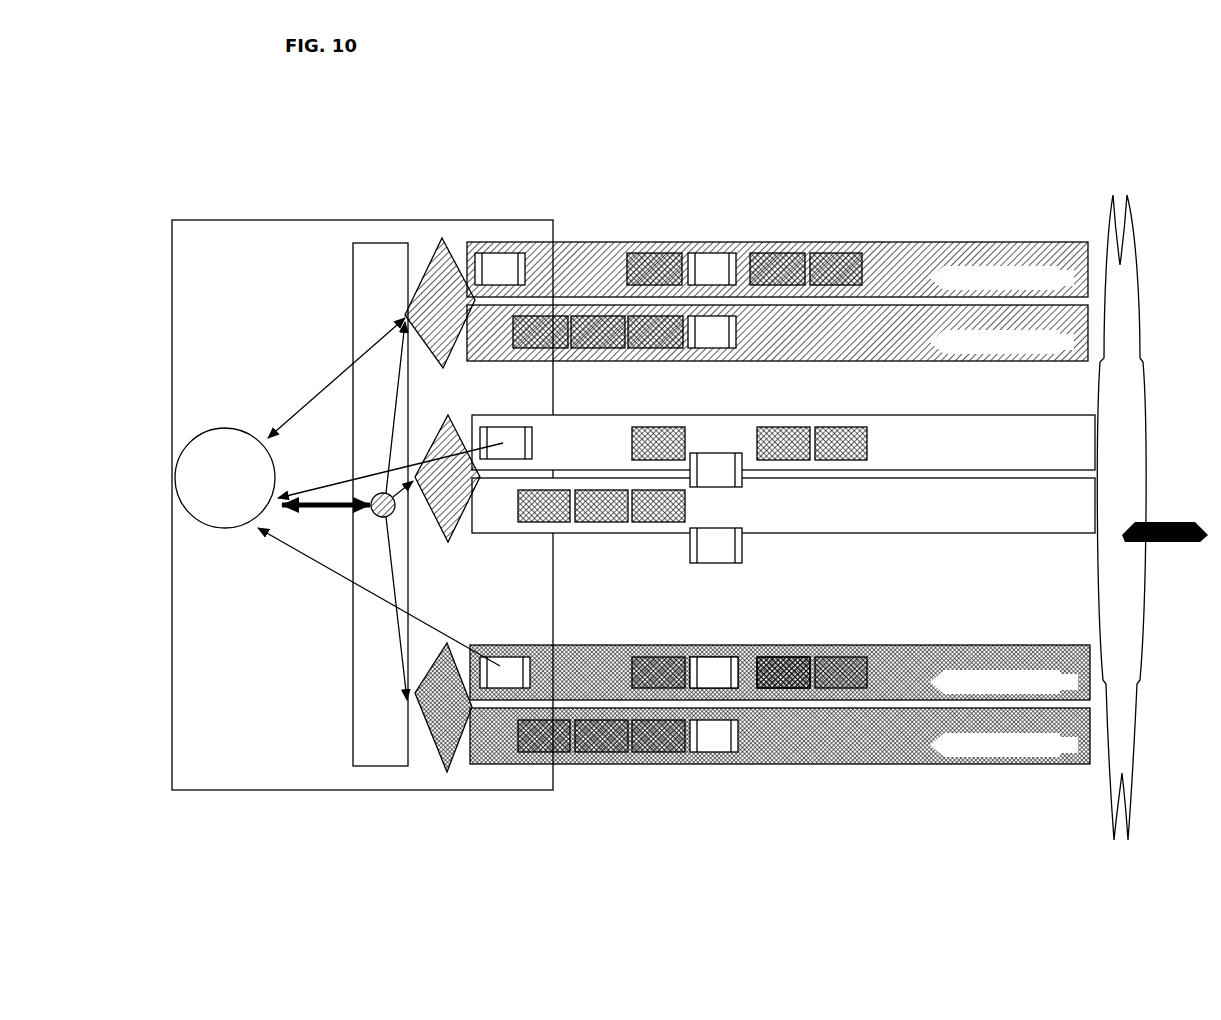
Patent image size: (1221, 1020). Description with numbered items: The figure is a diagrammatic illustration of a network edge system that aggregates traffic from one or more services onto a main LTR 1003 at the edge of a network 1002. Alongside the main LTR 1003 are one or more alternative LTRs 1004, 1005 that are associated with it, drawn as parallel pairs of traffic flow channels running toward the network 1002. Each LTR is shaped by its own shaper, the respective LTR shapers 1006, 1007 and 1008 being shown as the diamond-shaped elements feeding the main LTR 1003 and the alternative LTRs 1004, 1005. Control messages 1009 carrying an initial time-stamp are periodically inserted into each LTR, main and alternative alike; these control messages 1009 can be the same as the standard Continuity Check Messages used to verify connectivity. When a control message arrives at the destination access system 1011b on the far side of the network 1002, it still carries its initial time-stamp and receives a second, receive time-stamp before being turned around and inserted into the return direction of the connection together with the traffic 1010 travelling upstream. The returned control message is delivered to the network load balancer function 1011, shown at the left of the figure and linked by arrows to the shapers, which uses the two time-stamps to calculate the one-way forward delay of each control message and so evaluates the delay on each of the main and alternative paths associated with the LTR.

The network 1002 is at (1115, 845).
The main LTR 1003 is at (605, 645).
The alternative LTR 1004 is at (592, 415).
The alternative LTR 1005 is at (598, 242).
The LTR shaper 1006 is at (426, 668).
The LTR shaper 1007 is at (440, 416).
The LTR shaper 1008 is at (408, 262).
The control message 1009 is at (712, 645).
The traffic 1010 is at (770, 648).
The network load balancer function 1011 is at (207, 542).
The destination access system 1011b is at (1170, 565).